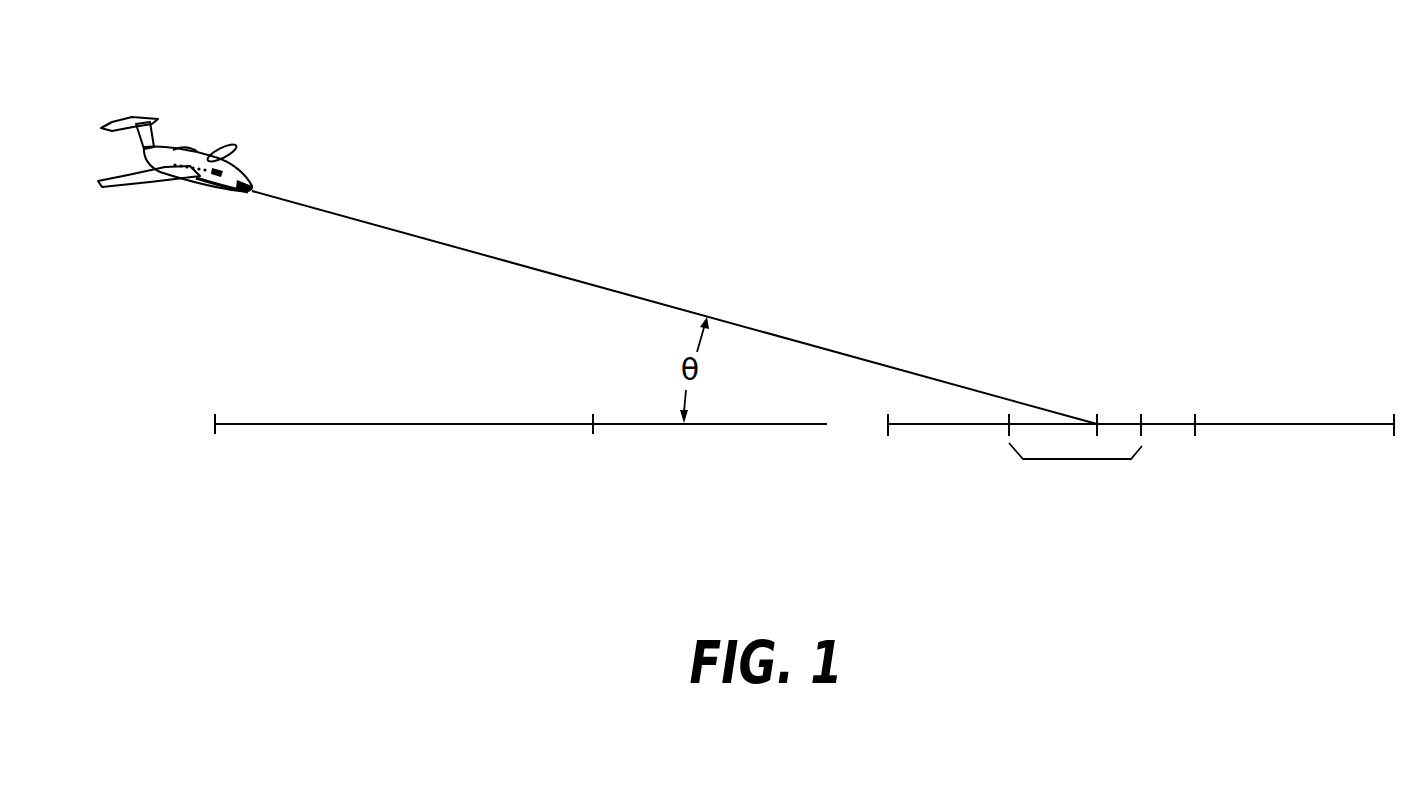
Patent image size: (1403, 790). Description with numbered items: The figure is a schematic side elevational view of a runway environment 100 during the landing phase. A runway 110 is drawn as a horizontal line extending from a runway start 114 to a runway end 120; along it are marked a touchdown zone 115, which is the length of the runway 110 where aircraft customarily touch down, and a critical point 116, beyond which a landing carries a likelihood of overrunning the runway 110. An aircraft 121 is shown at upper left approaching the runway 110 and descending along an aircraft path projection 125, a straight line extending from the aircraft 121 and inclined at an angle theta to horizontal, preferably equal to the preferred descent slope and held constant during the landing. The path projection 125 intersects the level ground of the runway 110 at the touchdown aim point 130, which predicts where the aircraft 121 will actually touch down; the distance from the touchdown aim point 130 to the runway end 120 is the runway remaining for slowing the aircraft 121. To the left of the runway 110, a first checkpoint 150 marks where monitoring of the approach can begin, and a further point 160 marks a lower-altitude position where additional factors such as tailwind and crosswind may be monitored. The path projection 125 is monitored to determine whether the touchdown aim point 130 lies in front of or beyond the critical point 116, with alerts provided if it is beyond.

The runway environment 100 is at (1085, 139).
The runway 110 is at (1226, 304).
The runway start 114 is at (870, 432).
The touchdown zone 115 is at (1075, 459).
The critical point 116 is at (1195, 402).
The runway end 120 is at (1394, 402).
The aircraft 121 is at (202, 148).
The aircraft path projection 125 is at (559, 277).
The touchdown aim point 130 is at (1097, 402).
The first checkpoint 150 is at (215, 441).
The point 160 is at (593, 441).